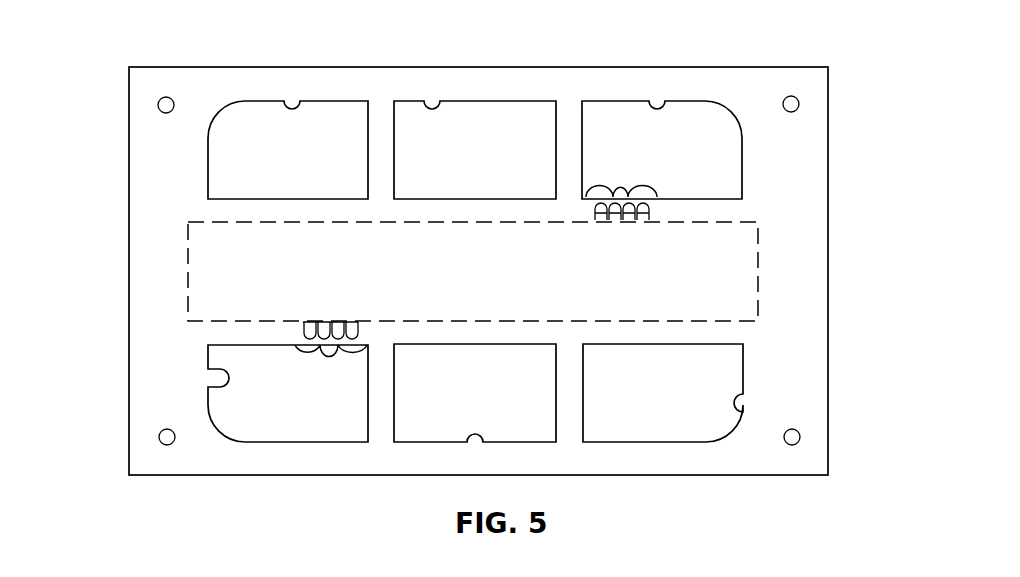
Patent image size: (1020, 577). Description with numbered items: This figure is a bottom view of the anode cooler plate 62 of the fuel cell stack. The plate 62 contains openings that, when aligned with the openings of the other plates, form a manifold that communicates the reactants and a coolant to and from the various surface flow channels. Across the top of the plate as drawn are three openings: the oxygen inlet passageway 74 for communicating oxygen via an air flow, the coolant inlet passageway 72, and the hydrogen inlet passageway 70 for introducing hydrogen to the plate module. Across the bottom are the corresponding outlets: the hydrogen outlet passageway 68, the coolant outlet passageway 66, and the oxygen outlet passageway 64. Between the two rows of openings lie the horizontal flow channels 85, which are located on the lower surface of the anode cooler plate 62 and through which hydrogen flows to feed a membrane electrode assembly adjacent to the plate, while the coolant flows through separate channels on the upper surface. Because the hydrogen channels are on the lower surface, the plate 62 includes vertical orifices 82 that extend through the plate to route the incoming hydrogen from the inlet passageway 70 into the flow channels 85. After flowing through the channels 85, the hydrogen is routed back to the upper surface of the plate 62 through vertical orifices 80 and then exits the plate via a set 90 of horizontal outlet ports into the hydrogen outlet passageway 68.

The anode cooler plate 62 is at (830, 291).
The oxygen outlet passageway 64 is at (734, 398).
The coolant outlet passageway 66 is at (403, 520).
The hydrogen outlet passageway 68 is at (220, 369).
The hydrogen inlet passageway 70 is at (664, 108).
The coolant inlet passageway 72 is at (439, 108).
The oxygen inlet passageway 74 is at (299, 108).
The vertical orifices 80 is at (333, 360).
The vertical orifices 82 is at (622, 187).
The horizontal flow channels 85 is at (188, 258).
The set of horizontal outlet ports 90 is at (238, 346).